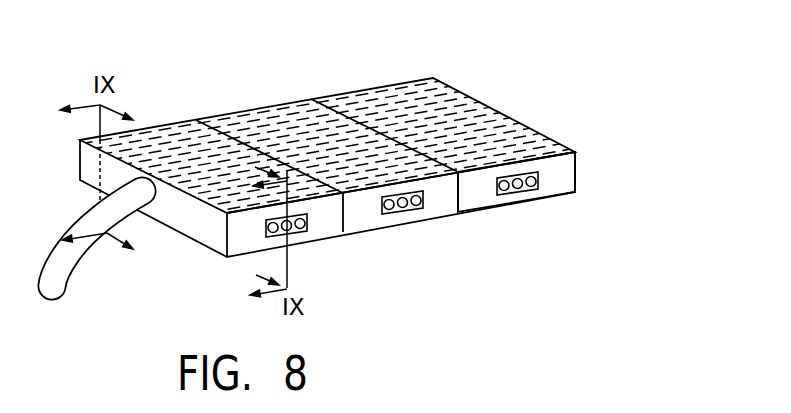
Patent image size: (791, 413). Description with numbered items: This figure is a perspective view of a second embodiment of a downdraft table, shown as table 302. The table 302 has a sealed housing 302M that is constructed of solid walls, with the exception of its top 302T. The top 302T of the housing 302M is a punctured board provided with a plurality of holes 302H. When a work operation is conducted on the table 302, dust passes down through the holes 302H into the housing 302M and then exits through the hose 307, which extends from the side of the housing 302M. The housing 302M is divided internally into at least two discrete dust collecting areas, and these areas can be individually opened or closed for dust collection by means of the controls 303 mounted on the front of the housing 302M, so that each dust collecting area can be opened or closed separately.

The table 302 is at (500, 224).
The holes 302H is at (424, 92).
The top 302T is at (497, 112).
The housing 302M is at (555, 173).
The controls 303 is at (400, 214).
The hose 307 is at (77, 252).